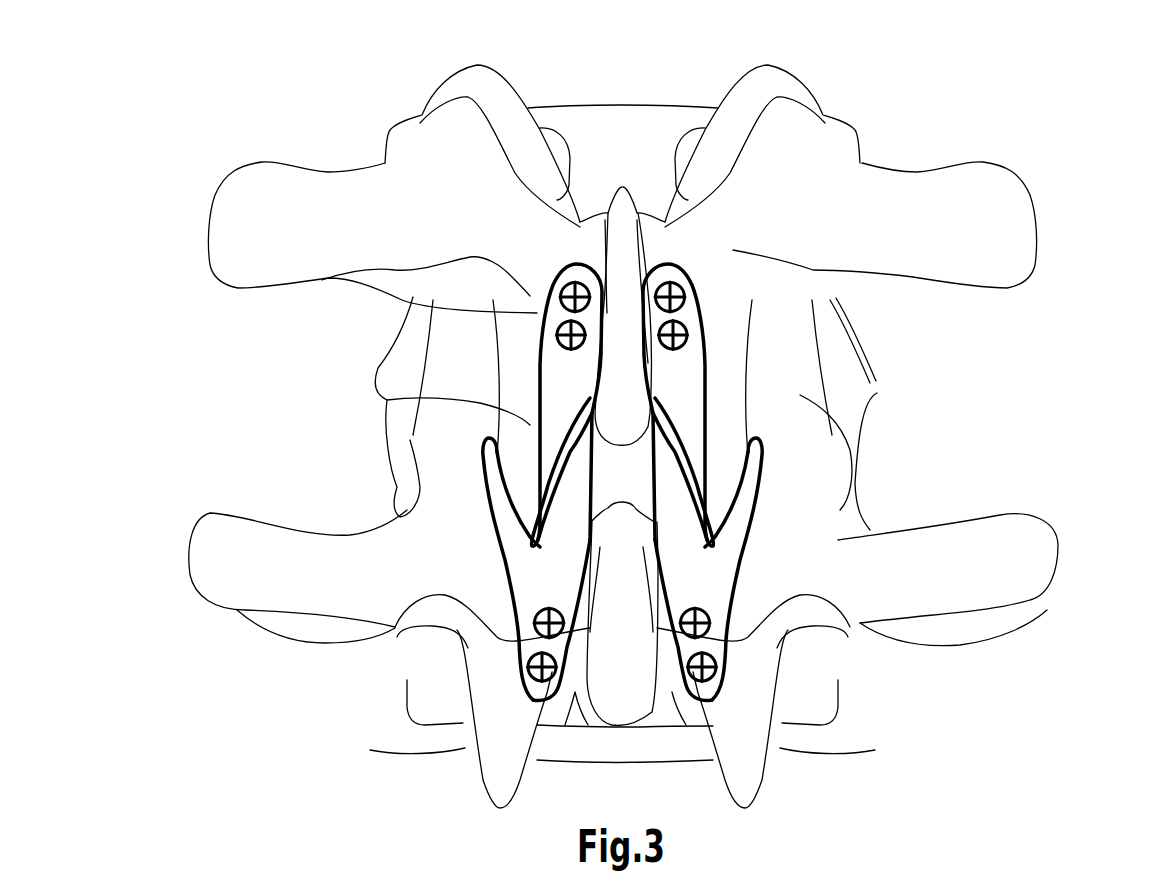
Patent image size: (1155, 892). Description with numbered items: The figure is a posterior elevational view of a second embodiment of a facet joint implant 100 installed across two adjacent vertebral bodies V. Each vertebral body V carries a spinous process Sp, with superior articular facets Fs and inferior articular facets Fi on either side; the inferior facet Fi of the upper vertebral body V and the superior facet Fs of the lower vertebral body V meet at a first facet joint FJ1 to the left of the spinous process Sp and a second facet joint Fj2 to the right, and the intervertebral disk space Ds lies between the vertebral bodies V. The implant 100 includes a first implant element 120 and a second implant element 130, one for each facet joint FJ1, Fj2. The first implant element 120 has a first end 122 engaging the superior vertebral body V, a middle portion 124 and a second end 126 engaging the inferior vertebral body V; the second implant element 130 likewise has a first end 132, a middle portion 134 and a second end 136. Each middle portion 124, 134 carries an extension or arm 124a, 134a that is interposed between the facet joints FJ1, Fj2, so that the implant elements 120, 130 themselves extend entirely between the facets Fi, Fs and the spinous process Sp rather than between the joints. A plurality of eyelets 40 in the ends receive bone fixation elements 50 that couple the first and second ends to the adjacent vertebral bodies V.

The facet joint implant 100 is at (920, 112).
The first implant element 120 is at (443, 419).
The first end 122 is at (565, 285).
The middle portion 124 is at (577, 475).
The extension or arm 124a is at (497, 498).
The second end 126 is at (545, 692).
The second implant element 130 is at (792, 419).
The first end 132 is at (683, 285).
The middle portion 134 is at (683, 487).
The extension or arm 134a is at (750, 497).
The second end 136 is at (713, 693).
The eyelets 40 is at (557, 335).
The bone fixation elements 50 is at (558, 294).
The spinous process Sp is at (620, 325).
The vertebral body V is at (987, 225).
The first facet joint FJ1 is at (483, 433).
The second facet joint Fj2 is at (763, 437).
The intervertebral disk space Ds is at (865, 437).
The inferior articular facet Fi is at (523, 480).
The superior articular facet Fs is at (450, 473).